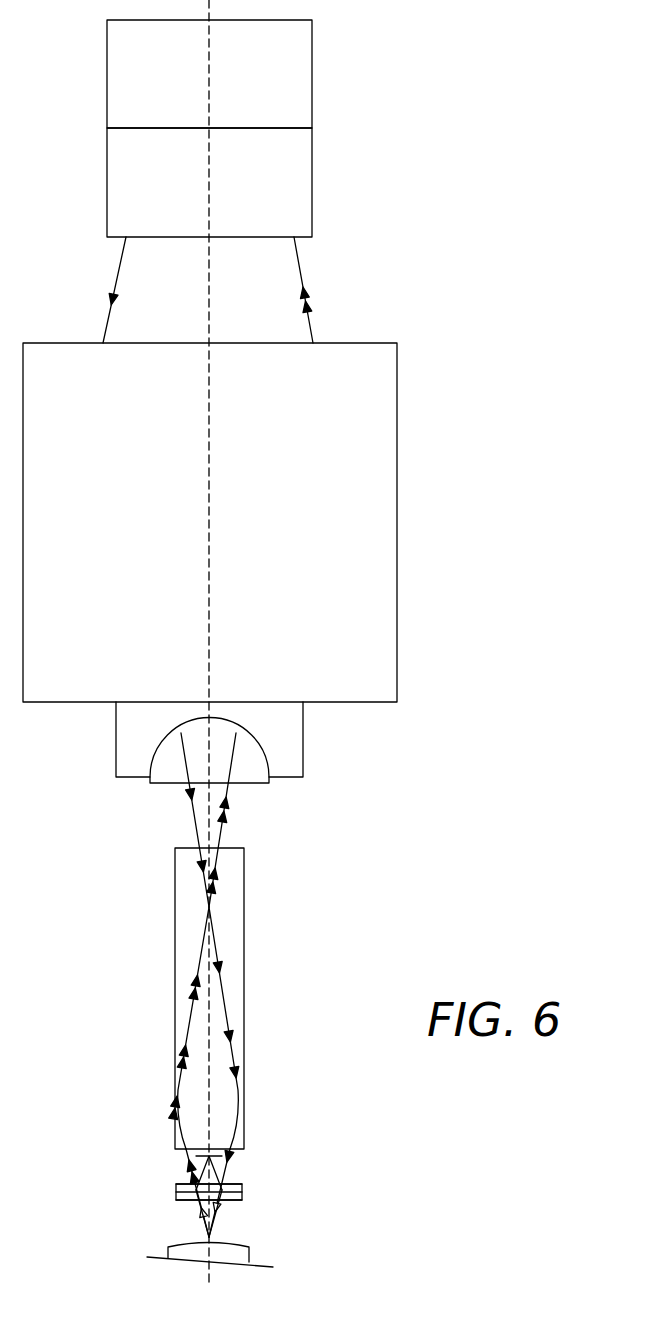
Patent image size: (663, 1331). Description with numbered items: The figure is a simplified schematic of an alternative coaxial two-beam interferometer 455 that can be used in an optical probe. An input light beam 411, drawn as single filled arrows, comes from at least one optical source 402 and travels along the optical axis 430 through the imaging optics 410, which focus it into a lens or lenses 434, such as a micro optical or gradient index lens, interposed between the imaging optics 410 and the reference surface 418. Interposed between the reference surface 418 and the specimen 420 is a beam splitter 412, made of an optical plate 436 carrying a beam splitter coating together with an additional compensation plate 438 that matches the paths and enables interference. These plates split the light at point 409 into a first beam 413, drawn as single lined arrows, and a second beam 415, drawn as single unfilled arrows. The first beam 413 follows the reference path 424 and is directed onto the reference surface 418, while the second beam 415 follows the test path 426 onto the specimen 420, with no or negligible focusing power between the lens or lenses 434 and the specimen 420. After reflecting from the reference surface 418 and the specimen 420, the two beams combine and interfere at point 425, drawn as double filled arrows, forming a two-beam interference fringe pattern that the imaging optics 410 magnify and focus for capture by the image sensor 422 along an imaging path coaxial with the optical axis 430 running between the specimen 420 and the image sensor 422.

The optical source 402 is at (231, 86).
The image sensor 422 is at (226, 196).
The coaxial two-beam interferometer 455 is at (448, 72).
The imaging optics 410 is at (231, 550).
The optical axis 430 is at (209, 627).
The input light beam 411 is at (191, 813).
The lens or lenses 434 is at (244, 924).
The point 425 is at (192, 1173).
The reference surface 418 is at (216, 1156).
The first beam 413 is at (219, 1168).
The beam splitter 412 is at (222, 1202).
The reference path 424 is at (108, 1158).
The test path 426 is at (108, 1200).
The optical plate 436 is at (183, 1188).
The compensation plate 438 is at (183, 1197).
The point 409 is at (235, 1196).
The second beam 415 is at (216, 1222).
The specimen 420 is at (193, 1237).